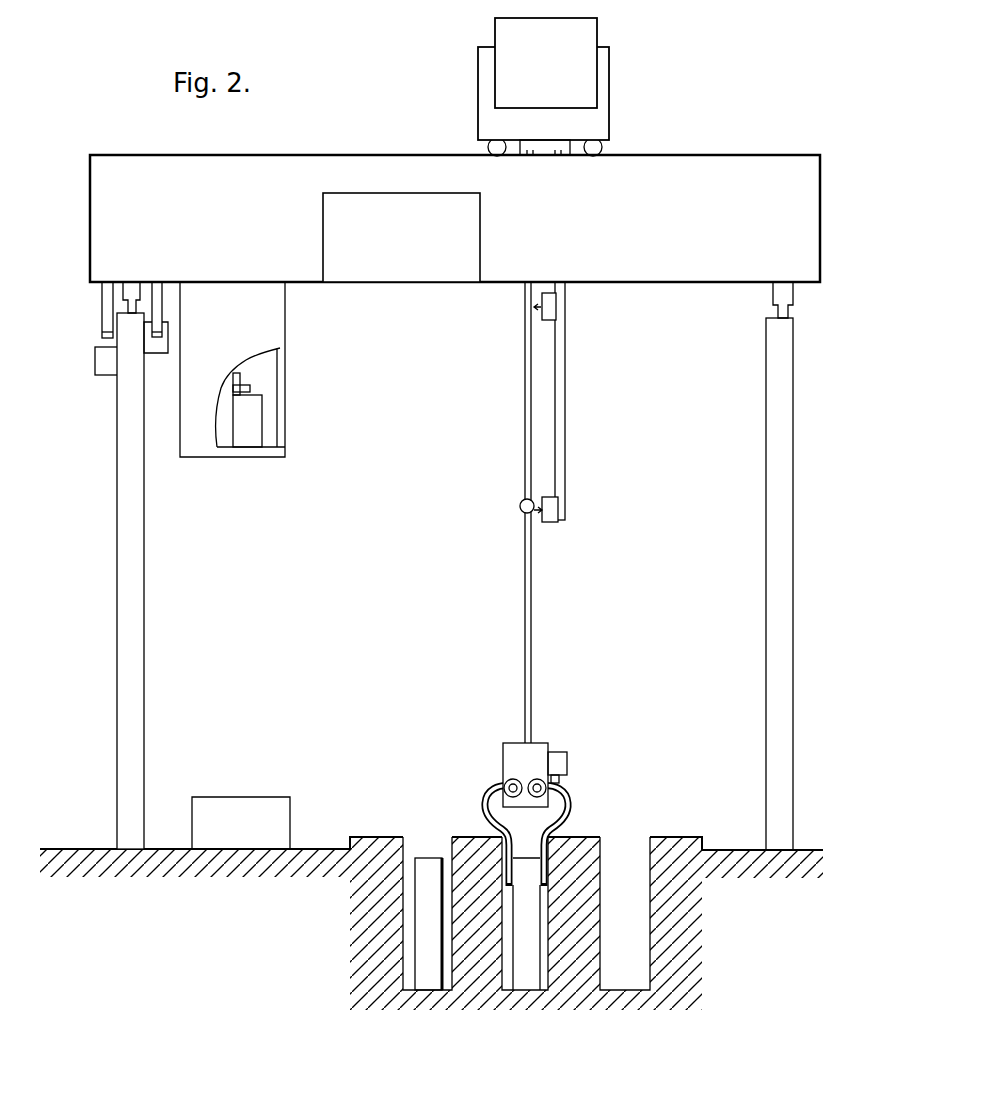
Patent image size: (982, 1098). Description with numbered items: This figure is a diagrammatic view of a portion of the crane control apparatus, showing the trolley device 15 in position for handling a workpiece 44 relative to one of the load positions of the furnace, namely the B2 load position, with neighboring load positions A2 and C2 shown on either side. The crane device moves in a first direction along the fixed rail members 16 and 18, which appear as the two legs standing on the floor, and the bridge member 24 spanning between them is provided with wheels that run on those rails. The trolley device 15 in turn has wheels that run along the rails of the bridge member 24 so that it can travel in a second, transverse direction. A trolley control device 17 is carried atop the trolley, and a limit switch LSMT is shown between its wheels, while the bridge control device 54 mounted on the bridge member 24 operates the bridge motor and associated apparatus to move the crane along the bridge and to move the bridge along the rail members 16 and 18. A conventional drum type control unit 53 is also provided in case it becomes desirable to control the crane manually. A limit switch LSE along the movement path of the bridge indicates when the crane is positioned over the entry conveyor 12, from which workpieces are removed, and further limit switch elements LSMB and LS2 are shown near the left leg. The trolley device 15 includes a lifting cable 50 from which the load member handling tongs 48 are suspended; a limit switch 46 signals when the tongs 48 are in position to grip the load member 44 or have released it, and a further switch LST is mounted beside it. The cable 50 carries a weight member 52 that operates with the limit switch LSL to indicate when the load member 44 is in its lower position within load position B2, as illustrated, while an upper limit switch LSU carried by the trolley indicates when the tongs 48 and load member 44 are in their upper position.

The trolley control device 17 is at (605, 22).
The trolley device 15 is at (609, 78).
The trolley motion limit switch LSMT is at (547, 145).
The bridge member 24 is at (712, 143).
The bridge control device 54 is at (480, 250).
The rail member 18 is at (134, 312).
The bridge motion limit switch LSMB is at (100, 332).
The limit switch LS2 is at (105, 375).
The limit switch LSE is at (157, 353).
The drum type control unit 53 is at (250, 440).
The upper limit switch LSU is at (558, 311).
The weight member 52 is at (521, 506).
The limit switch LSL is at (560, 508).
The lifting cable 50 is at (537, 596).
The rail member 16 is at (772, 311).
The limit switch 46 is at (548, 748).
The grapple limit switch LST is at (569, 764).
The load member handling tongs 48 is at (568, 810).
The entry conveyor 12 is at (277, 793).
The load position C2 is at (410, 992).
The workpiece 44 is at (525, 978).
The load position B2 is at (545, 980).
The load position A2 is at (630, 992).